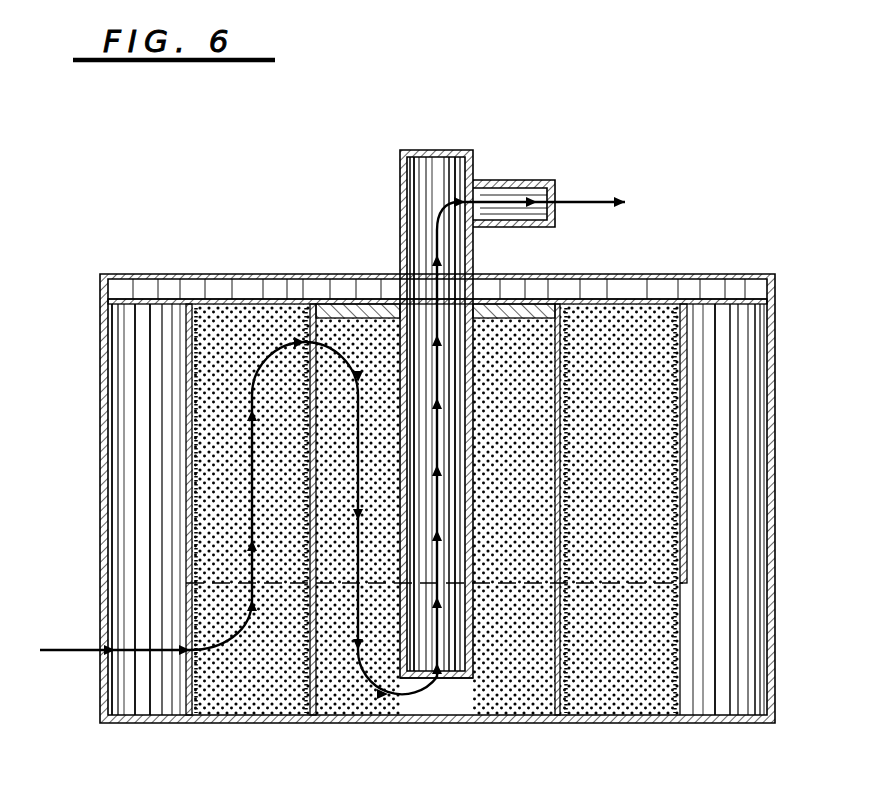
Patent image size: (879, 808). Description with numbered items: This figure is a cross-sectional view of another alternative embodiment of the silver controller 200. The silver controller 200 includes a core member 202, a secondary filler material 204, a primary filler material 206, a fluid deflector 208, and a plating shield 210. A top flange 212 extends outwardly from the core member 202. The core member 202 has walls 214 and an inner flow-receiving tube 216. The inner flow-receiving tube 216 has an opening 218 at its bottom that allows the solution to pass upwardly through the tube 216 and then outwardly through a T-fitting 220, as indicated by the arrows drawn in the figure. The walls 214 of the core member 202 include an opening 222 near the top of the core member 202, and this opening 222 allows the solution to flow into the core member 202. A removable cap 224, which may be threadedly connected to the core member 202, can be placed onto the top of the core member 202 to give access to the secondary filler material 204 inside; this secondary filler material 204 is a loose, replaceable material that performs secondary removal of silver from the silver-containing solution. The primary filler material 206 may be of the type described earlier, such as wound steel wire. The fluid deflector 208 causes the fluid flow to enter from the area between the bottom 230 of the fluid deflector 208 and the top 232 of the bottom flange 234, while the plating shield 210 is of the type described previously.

The silver controller 200 is at (424, 471).
The core member 202 is at (441, 467).
The secondary filler material 204 is at (352, 685).
The primary filler material 206 is at (257, 687).
The fluid deflector 208 is at (688, 522).
The plating shield 210 is at (97, 470).
The top flange 212 is at (720, 298).
The walls 214 is at (323, 670).
The inner flow receiving tube 216 is at (423, 333).
The opening 218 is at (453, 680).
The T-fitting 220 is at (455, 150).
The opening 222 is at (300, 330).
The removable cap 224 is at (548, 300).
The bottom 230 is at (620, 583).
The top 232 is at (728, 712).
The bottom flange 234 is at (700, 725).